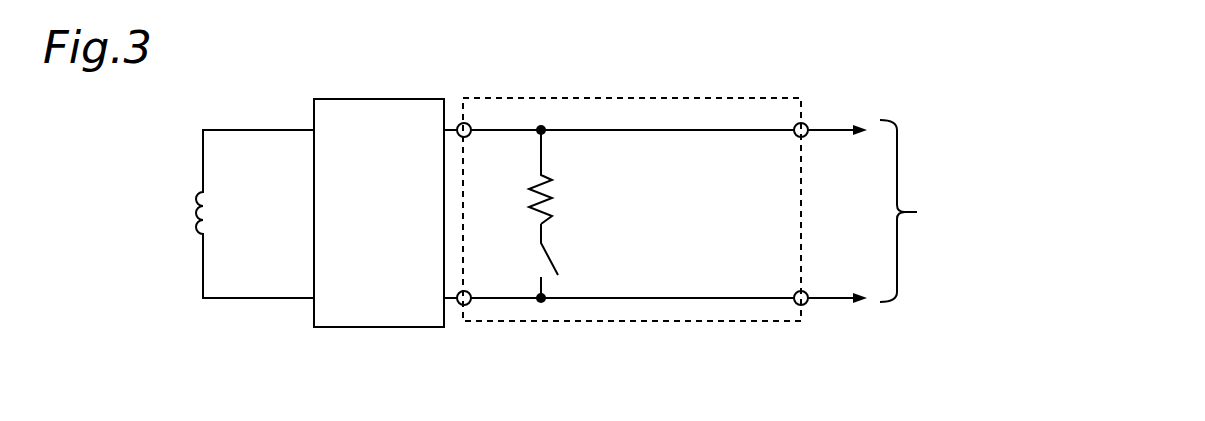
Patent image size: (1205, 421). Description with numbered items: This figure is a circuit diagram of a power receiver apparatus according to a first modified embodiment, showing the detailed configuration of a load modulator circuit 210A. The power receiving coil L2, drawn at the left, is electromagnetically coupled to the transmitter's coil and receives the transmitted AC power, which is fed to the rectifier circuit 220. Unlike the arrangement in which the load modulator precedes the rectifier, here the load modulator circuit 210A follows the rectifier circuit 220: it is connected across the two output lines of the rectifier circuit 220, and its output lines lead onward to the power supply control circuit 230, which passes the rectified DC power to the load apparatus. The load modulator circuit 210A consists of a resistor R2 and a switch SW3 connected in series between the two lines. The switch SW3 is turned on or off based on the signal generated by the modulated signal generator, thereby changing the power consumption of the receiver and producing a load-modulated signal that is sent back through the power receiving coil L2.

The load modulator circuit 210A is at (524, 67).
The rectifier circuit 220 is at (357, 328).
The power supply control circuit 230 is at (997, 211).
The resistor R2 is at (553, 205).
The switch SW3 is at (552, 259).
The power receiving coil L2 is at (188, 236).